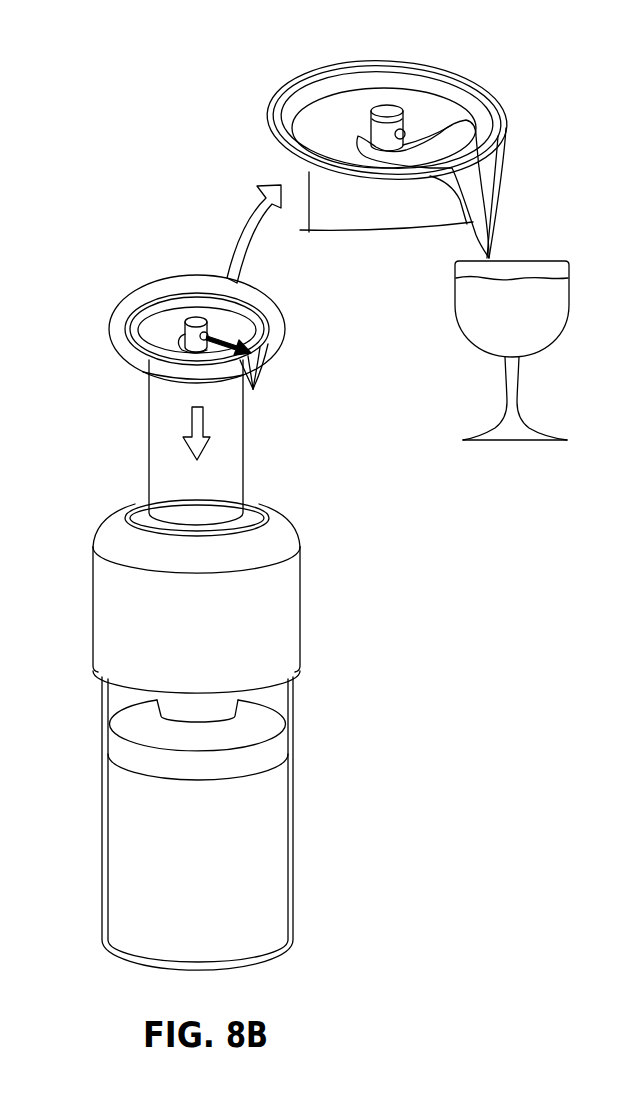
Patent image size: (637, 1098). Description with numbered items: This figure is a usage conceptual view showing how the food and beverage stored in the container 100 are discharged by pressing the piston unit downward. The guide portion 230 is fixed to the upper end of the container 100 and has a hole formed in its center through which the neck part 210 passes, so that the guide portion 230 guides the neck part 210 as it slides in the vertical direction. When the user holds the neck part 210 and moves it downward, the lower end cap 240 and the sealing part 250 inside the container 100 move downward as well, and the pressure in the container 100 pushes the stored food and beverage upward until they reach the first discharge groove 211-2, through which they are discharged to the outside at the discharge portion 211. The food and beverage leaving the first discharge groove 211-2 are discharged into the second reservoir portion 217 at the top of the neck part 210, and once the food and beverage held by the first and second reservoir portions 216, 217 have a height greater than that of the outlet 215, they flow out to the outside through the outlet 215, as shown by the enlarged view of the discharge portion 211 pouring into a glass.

The container 100 is at (101, 790).
The neck part 210 is at (162, 422).
The discharge portion 211 is at (386, 108).
The first discharge groove 211-2 is at (194, 317).
The outlet 215 is at (481, 163).
The first reservoir portion 216 is at (416, 131).
The second reservoir portion 217 is at (445, 134).
The guide portion 230 is at (113, 615).
The lower end cap 240 is at (128, 721).
The sealing part 250 is at (273, 752).